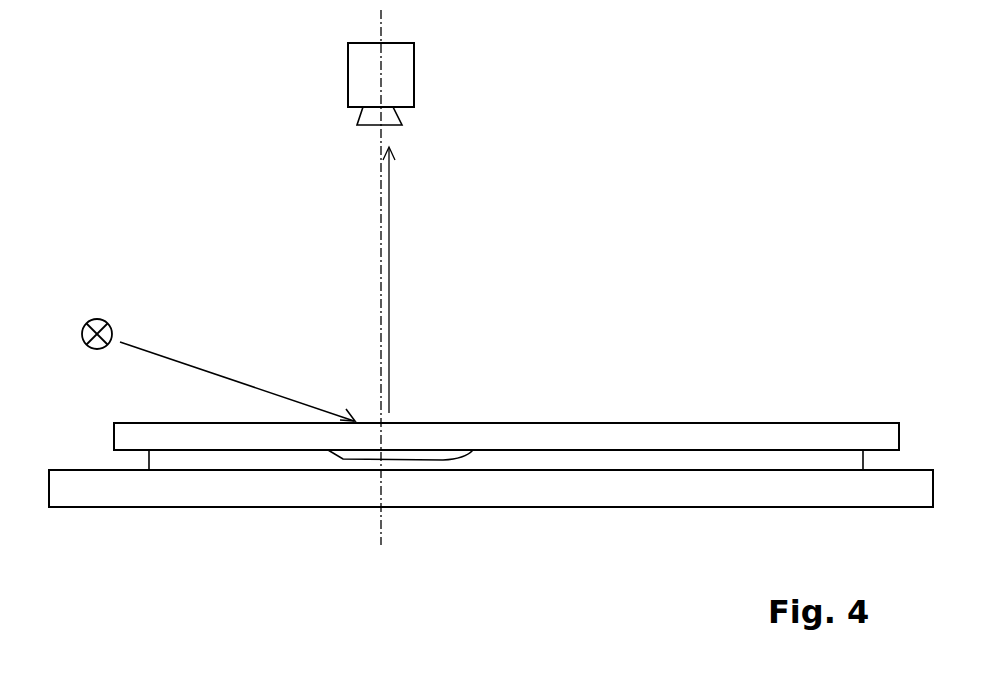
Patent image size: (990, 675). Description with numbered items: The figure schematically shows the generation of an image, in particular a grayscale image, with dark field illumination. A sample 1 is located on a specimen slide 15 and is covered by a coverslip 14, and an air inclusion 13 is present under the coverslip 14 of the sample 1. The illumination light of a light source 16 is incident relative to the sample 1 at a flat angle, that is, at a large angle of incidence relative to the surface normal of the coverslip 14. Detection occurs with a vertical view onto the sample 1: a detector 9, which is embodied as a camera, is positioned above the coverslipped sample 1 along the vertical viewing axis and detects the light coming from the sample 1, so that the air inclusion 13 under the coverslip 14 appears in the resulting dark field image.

The sample 1 is at (852, 458).
The detector 9 is at (399, 77).
The air inclusion 13 is at (440, 455).
The coverslip 14 is at (585, 430).
The specimen slide 15 is at (472, 495).
The light source 16 is at (98, 325).